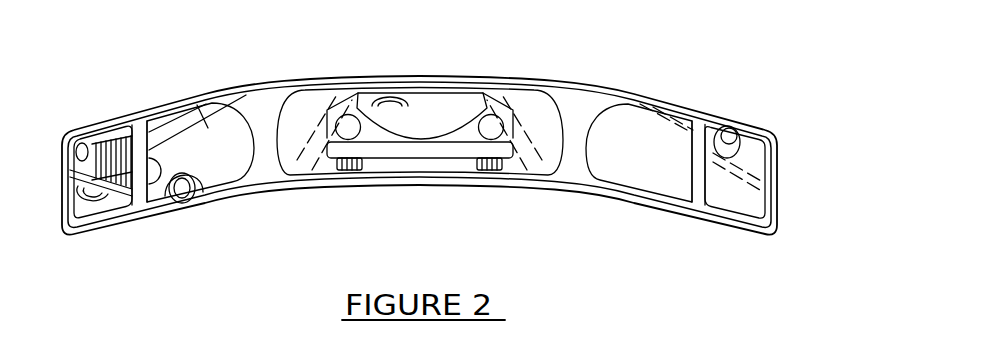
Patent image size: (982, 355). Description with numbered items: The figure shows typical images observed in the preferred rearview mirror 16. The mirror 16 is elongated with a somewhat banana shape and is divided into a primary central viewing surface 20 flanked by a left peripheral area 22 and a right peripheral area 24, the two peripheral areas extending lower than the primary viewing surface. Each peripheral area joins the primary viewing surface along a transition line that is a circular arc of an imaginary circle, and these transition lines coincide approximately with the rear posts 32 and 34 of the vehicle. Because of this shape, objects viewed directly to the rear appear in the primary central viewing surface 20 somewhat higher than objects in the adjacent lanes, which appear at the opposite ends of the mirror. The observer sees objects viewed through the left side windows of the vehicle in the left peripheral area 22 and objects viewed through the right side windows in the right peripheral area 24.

The mirror 16 is at (540, 80).
The primary central viewing surface 20 is at (438, 165).
The left peripheral area 22 is at (92, 214).
The right peripheral area 24 is at (738, 208).
The rear post 32 is at (261, 105).
The rear post 34 is at (586, 116).